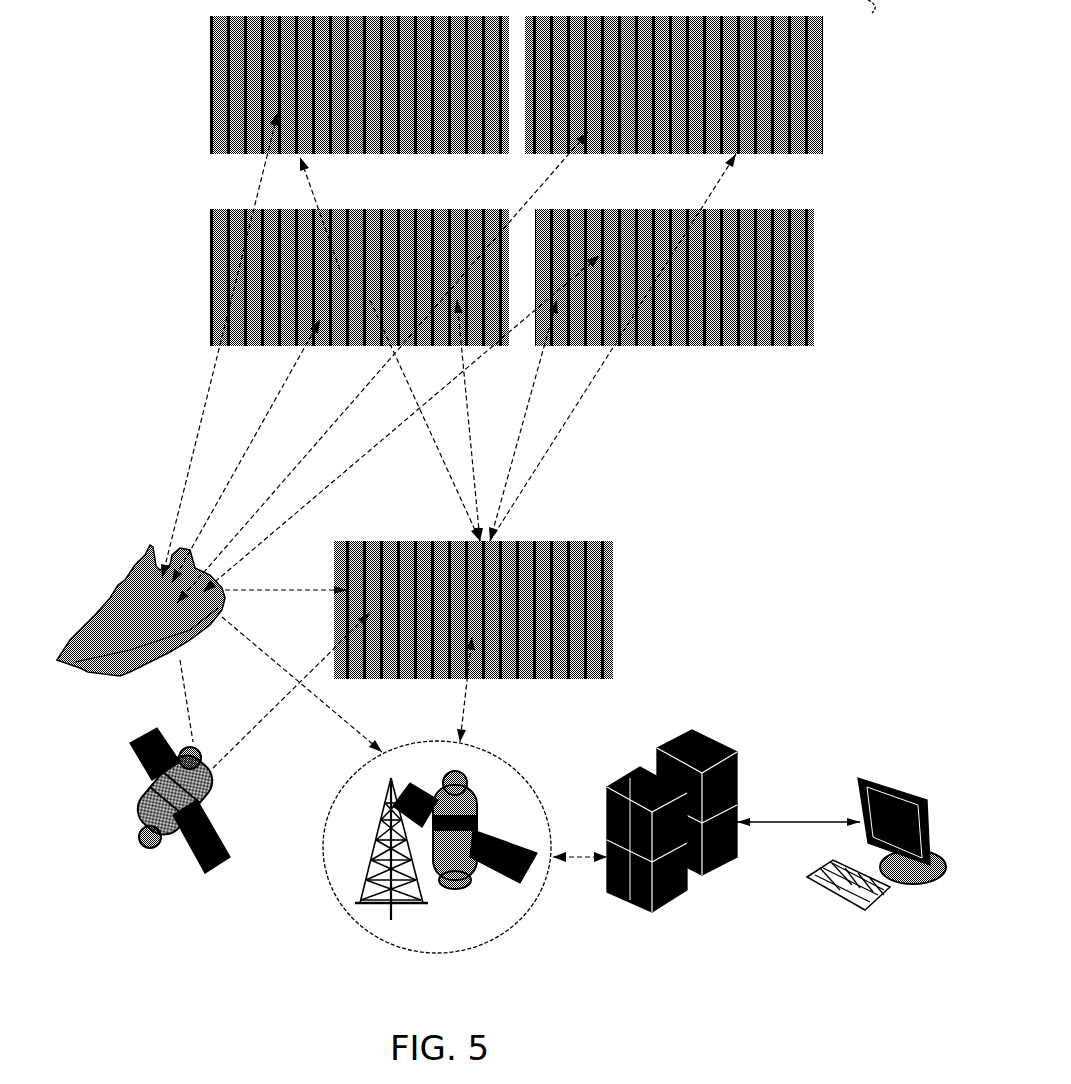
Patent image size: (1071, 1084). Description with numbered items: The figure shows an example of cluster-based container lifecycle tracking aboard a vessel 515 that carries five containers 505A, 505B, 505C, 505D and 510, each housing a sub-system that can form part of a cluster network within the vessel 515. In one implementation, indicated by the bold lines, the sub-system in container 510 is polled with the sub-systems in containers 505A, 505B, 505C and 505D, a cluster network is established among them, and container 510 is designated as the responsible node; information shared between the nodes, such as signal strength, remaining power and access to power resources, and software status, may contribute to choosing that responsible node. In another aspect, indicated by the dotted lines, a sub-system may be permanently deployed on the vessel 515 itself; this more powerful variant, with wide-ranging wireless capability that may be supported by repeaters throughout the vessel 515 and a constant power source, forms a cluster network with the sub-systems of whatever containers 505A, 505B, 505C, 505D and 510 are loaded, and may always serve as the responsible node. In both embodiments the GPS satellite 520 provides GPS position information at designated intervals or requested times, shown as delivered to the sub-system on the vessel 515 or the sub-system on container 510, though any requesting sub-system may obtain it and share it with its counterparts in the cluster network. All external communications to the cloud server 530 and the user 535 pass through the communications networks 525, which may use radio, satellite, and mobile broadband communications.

The container 505A is at (805, 118).
The container 505B is at (210, 35).
The container 505C is at (210, 226).
The container 505D is at (797, 280).
The container 510 is at (613, 556).
The vessel 515 is at (70, 667).
The GPS satellite 520 is at (130, 825).
The communications networks 525 is at (318, 845).
The cloud server 530 is at (731, 749).
The user 535 is at (893, 776).